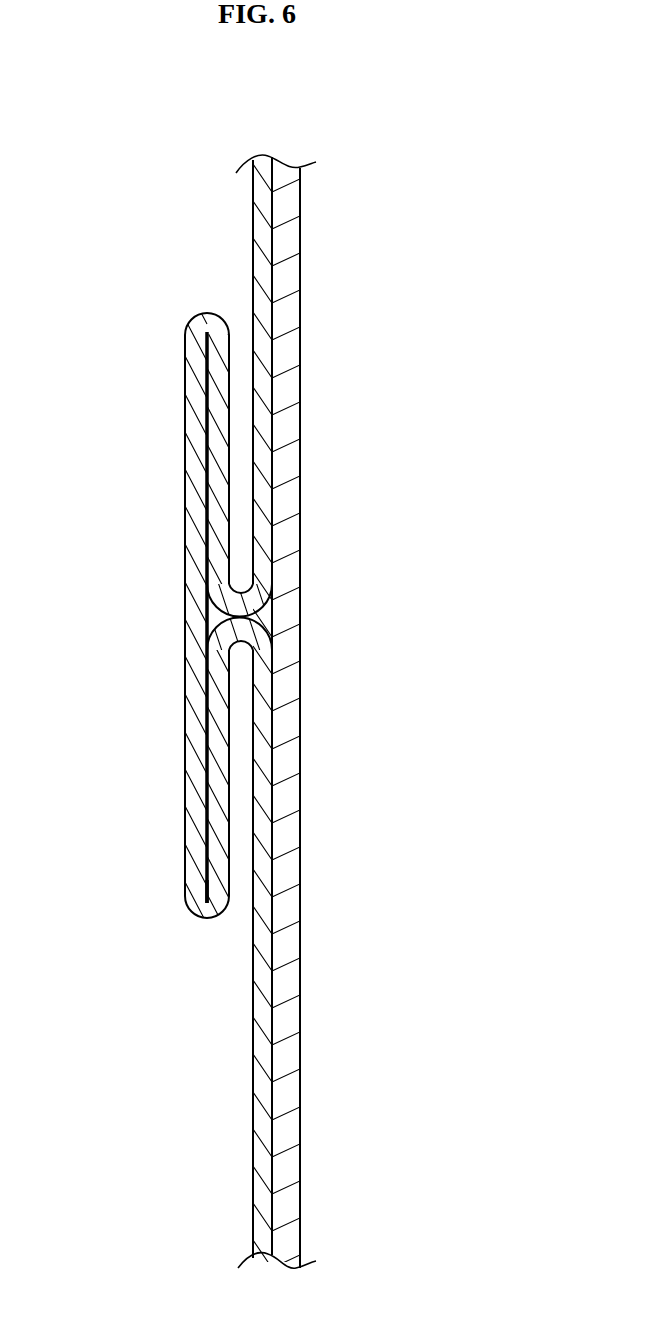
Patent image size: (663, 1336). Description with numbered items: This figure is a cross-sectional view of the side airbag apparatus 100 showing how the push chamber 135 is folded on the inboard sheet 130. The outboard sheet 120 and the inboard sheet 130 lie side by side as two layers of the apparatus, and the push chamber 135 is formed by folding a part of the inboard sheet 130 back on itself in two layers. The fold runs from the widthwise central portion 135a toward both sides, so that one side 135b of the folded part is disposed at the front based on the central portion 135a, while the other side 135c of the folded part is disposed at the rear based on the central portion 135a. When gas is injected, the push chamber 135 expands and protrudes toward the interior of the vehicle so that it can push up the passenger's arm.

The side airbag apparatus 100 is at (493, 116).
The outboard sheet 120 is at (288, 426).
The inboard sheet 130 is at (244, 254).
The push chamber 135 is at (256, 622).
The central portion 135a is at (250, 660).
The one side of the folded part 135b is at (205, 314).
The other side of the folded part 135c is at (204, 913).